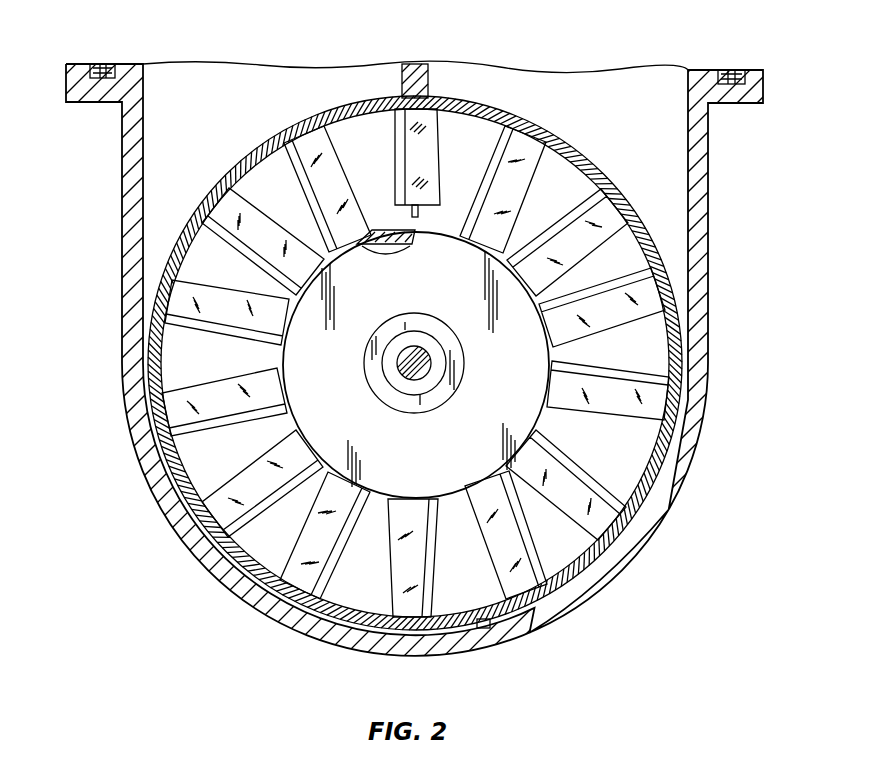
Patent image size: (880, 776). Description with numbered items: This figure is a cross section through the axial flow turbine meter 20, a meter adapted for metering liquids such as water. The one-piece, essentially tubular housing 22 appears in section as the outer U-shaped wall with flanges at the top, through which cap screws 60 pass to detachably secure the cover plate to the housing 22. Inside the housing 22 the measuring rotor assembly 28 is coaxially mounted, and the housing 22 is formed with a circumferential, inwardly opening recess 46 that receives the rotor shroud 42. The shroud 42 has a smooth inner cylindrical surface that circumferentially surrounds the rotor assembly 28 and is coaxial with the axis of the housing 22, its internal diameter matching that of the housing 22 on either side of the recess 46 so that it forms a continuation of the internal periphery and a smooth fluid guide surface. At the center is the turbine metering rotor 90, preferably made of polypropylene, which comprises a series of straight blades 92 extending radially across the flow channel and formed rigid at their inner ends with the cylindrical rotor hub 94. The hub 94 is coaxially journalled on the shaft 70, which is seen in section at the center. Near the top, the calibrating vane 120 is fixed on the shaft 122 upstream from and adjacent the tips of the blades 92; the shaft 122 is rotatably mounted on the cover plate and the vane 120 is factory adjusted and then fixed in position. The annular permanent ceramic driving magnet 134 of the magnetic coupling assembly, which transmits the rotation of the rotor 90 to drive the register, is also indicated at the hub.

The axial flow turbine meter 20 is at (285, 638).
The housing 22 is at (547, 617).
The measuring rotor assembly 28 is at (448, 528).
The rotor shroud 42 is at (580, 156).
The recess 46 is at (484, 628).
The cap screws 60 is at (90, 74).
The shaft 70 is at (422, 345).
The turbine metering rotor 90 is at (502, 253).
The blades 92 is at (332, 183).
The rotor hub 94 is at (385, 228).
The calibrating vane 120 is at (420, 206).
The shaft 122 is at (428, 78).
The driving magnet 134 is at (437, 400).